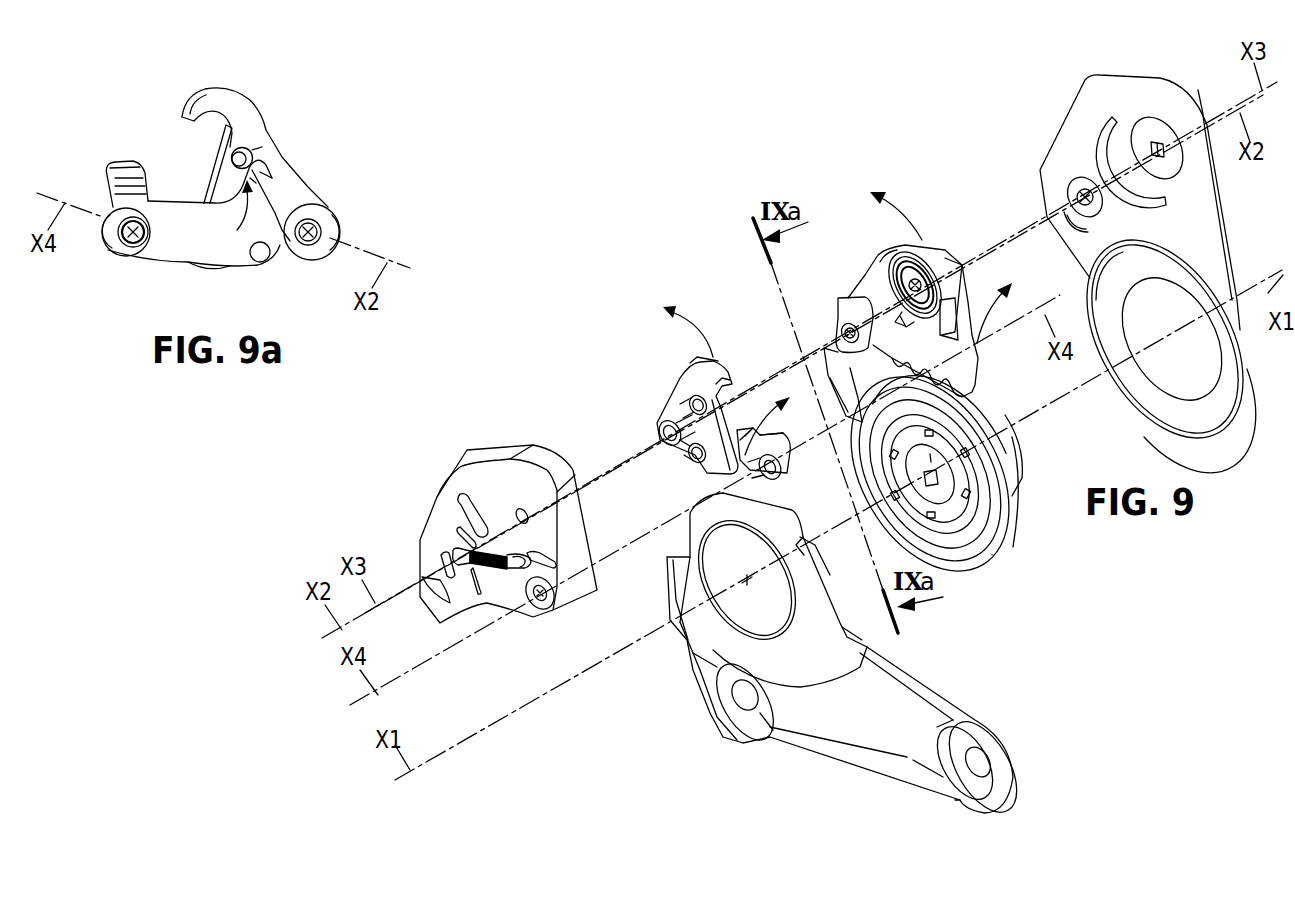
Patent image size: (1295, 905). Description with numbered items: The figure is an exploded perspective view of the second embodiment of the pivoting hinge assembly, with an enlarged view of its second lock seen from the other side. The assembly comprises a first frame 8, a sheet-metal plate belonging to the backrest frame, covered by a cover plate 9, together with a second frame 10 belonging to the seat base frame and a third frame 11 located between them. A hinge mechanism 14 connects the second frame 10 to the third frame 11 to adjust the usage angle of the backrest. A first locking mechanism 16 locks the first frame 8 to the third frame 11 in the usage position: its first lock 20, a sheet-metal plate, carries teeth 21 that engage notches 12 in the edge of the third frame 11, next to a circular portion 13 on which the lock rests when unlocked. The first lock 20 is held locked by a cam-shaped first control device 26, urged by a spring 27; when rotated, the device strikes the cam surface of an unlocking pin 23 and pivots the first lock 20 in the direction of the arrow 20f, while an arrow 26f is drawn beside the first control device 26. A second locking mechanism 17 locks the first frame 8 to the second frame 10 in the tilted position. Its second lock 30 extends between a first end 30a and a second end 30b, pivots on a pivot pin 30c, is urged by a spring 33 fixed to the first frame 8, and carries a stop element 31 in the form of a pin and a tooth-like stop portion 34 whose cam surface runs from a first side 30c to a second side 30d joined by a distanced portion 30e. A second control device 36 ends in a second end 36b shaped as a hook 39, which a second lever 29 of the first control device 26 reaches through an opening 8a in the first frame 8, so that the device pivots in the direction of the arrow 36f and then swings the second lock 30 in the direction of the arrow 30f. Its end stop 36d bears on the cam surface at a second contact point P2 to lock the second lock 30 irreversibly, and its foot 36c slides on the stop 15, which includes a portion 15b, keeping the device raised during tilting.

In FIG. 9, the first frame 8 is at (1130, 105).
In FIG. 9, the opening 8a is at (1122, 128).
In FIG. 9, the cover plate 9 is at (460, 490).
In FIG. 9, the second frame 10 is at (730, 722).
In FIG. 9, the third frame 11 is at (1005, 522).
In FIG. 9, the notches 12 is at (975, 407).
In FIG. 9, the circular portion 13 is at (1010, 452).
In FIG. 9, the hinge mechanism 14 is at (975, 548).
In FIG. 9, the stop 15 is at (777, 520).
In FIG. 9, the bracket edge 15b is at (805, 550).
In FIG. 9, the first locking mechanism 16 is at (822, 208).
In FIG. 9, the second locking mechanism 17 is at (656, 288).
In FIG. 9, the first lock 20 is at (873, 287).
In FIG. 9, the arrow 20f is at (914, 215).
In FIG. 9, the teeth 21 is at (972, 373).
In FIG. 9, the unlocking pin 23 is at (883, 270).
In FIG. 9, the first control device 26 is at (968, 337).
In FIG. 9, the pawl pivoting direction 26f is at (1000, 318).
In FIG. 9, the spring 27 is at (920, 268).
In FIG. 9, the second lever 29 is at (905, 323).
In FIG. 9a, the second lock 30 is at (177, 247).
In FIG. 9, the second lock 30 is at (785, 452).
In FIG. 9a, the first end 30a is at (122, 183).
In FIG. 9a, the second end 30b is at (259, 165).
In FIG. 9a, the pivot pin 30c is at (130, 247).
In FIG. 9a, the second side 30d is at (233, 187).
In FIG. 9a, the distanced portion 30e is at (268, 135).
In FIG. 9, the arrow 30f is at (748, 415).
In FIG. 9a, the stop element 31 is at (262, 254).
In FIG. 9, the stop element 31 is at (693, 462).
In FIG. 9, the spring 33 is at (455, 553).
In FIG. 9a, the stop portion 34 is at (253, 180).
In FIG. 9a, the second control device 36 is at (303, 202).
In FIG. 9, the second control device 36 is at (680, 407).
In FIG. 9a, the second end 36b is at (197, 110).
In FIG. 9a, the foot 36c is at (210, 270).
In FIG. 9a, the end stop 36d is at (242, 150).
In FIG. 9, the end stop 36d is at (698, 403).
In FIG. 9, the arrow 36f is at (695, 328).
In FIG. 9, the hook 39 is at (715, 382).
In FIG. 9a, the second contact point P2 is at (228, 213).